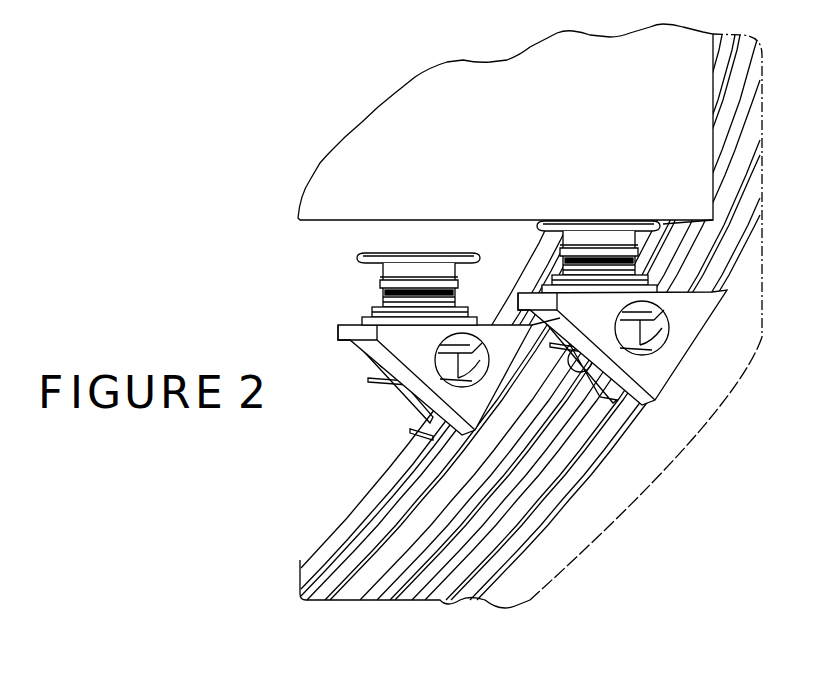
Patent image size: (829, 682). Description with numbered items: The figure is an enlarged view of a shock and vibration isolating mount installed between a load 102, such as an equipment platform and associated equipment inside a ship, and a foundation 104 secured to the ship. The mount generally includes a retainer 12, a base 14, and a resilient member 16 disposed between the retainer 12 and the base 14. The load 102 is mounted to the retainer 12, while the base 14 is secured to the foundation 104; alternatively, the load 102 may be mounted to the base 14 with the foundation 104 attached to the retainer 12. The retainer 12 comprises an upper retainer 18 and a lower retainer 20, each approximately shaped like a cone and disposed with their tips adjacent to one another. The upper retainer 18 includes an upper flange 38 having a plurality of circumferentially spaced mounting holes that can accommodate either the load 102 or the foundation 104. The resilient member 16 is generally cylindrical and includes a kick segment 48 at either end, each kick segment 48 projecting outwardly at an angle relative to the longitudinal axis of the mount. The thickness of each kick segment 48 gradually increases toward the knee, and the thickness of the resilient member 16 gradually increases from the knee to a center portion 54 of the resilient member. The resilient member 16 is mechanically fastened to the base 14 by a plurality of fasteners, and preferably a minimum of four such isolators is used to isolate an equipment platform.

The load 102 is at (497, 112).
The foundation 104 is at (436, 354).
The retainer 12 is at (406, 248).
The base 14 is at (360, 322).
The resilient member 16 is at (383, 298).
The upper retainer 18 is at (400, 253).
The lower retainer 20 is at (372, 381).
The upper flange 38 is at (443, 252).
The kick segment 48 is at (477, 357).
The center portion 54 is at (455, 300).